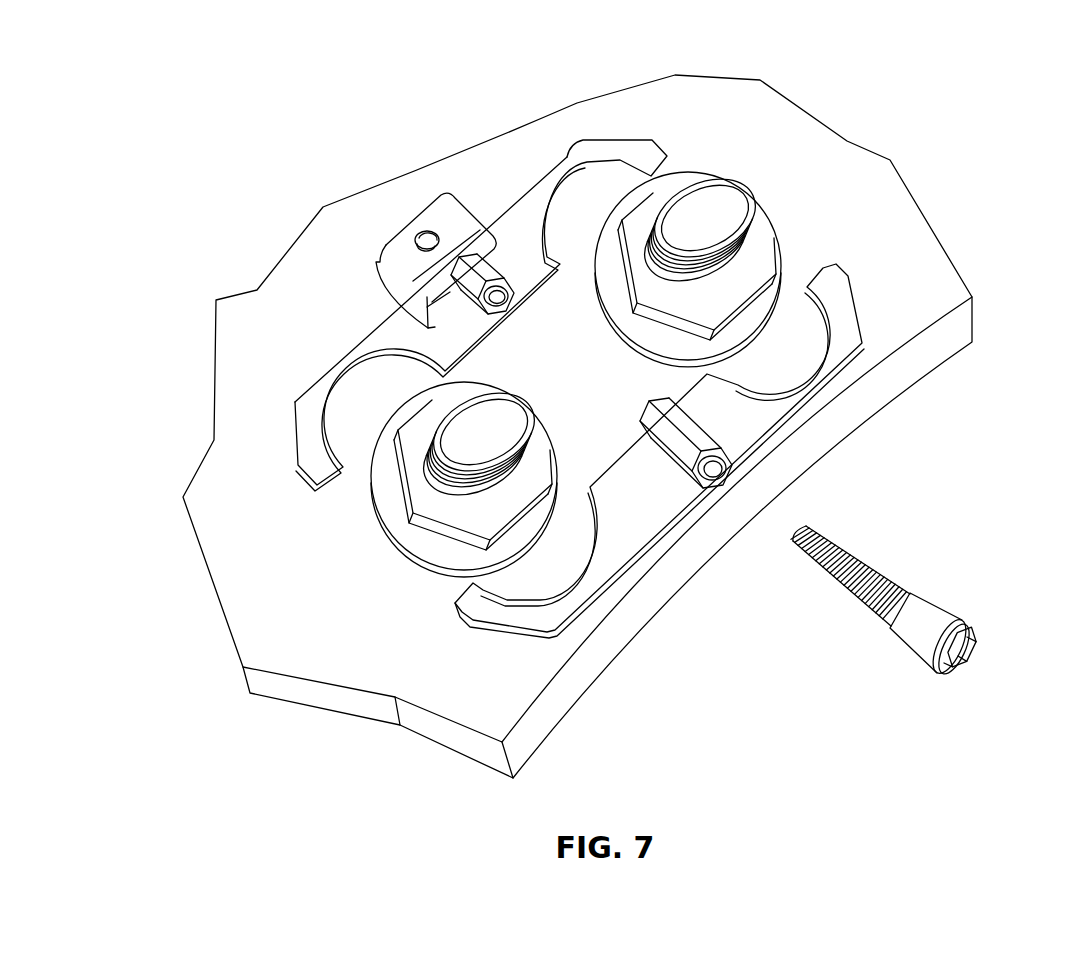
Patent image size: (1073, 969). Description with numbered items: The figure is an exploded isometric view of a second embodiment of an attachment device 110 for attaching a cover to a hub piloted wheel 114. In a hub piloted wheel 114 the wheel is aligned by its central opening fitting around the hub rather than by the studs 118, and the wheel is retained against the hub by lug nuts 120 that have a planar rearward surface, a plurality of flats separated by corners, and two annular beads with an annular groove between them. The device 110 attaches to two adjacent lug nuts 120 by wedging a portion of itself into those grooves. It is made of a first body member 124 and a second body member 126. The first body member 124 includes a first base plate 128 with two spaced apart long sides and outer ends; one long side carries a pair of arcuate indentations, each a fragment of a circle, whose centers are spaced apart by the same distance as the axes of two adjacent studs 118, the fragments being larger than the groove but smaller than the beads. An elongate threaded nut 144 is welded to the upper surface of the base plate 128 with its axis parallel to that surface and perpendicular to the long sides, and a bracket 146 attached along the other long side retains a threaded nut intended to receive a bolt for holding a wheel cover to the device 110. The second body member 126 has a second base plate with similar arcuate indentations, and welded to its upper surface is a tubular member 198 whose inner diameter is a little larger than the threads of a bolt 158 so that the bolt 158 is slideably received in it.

The device 110 is at (601, 415).
The wheel 114 is at (872, 178).
The studs 118 is at (713, 200).
The lug nuts 120 is at (753, 190).
The first body member 124 is at (597, 609).
The second body member 126 is at (497, 198).
The first base plate 128 is at (357, 333).
The elongate threaded nut 144 is at (479, 184).
The bracket 146 is at (390, 227).
The bolt 158 is at (890, 573).
The tubular member 198 is at (703, 428).